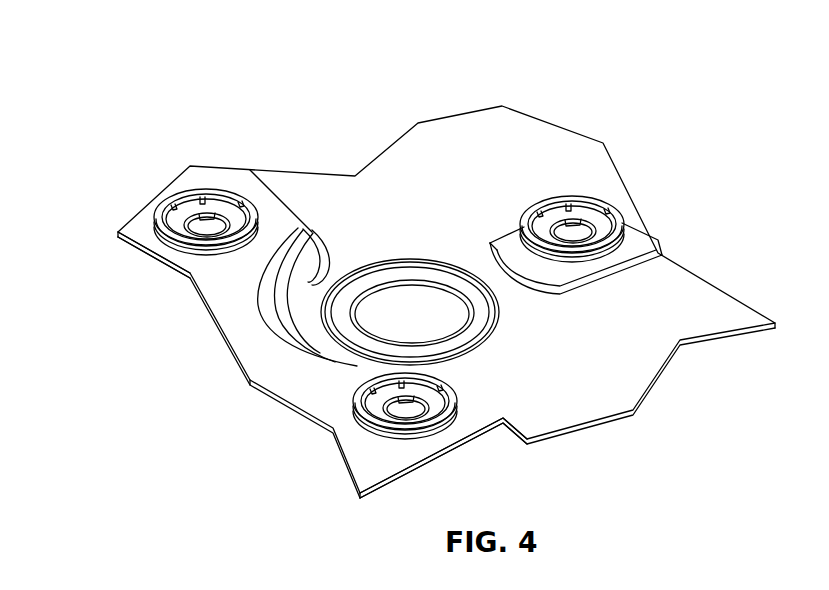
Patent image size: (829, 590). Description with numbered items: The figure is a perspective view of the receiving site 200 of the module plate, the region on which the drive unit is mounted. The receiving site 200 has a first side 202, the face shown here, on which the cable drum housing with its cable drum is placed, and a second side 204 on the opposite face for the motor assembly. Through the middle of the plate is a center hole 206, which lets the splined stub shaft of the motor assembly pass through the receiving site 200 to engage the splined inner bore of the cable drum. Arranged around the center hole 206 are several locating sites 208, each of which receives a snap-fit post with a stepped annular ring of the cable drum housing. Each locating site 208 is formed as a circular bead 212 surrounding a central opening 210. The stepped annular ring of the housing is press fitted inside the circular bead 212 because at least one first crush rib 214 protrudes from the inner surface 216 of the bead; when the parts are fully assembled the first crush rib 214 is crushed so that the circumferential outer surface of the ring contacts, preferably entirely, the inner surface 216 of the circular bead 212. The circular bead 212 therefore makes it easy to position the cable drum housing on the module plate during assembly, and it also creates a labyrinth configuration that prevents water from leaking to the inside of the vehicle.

The receiving site 200 is at (208, 45).
The first side 202 is at (525, 148).
The second side 204 is at (498, 427).
The center hole 206 is at (423, 298).
The locating site 208 is at (142, 197).
The central opening 210 is at (213, 217).
The circular bead 212 is at (175, 241).
The first crush rib 214 is at (187, 240).
The inner surface 216 is at (193, 210).